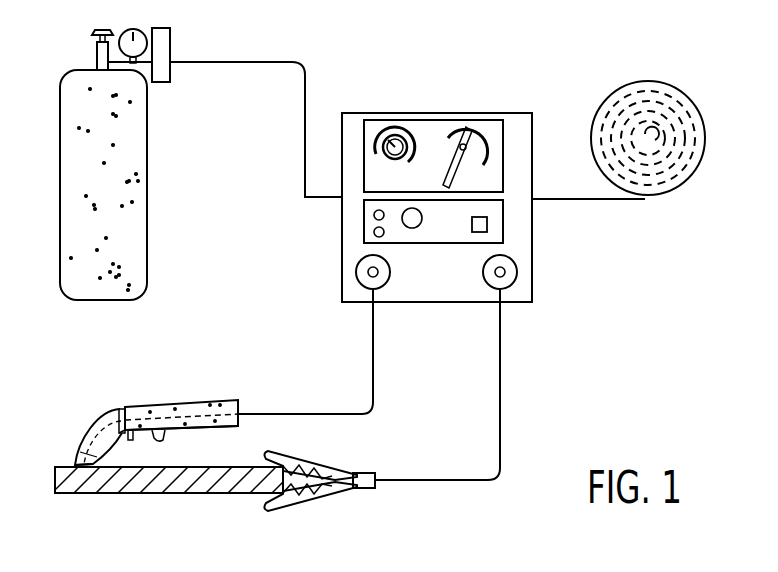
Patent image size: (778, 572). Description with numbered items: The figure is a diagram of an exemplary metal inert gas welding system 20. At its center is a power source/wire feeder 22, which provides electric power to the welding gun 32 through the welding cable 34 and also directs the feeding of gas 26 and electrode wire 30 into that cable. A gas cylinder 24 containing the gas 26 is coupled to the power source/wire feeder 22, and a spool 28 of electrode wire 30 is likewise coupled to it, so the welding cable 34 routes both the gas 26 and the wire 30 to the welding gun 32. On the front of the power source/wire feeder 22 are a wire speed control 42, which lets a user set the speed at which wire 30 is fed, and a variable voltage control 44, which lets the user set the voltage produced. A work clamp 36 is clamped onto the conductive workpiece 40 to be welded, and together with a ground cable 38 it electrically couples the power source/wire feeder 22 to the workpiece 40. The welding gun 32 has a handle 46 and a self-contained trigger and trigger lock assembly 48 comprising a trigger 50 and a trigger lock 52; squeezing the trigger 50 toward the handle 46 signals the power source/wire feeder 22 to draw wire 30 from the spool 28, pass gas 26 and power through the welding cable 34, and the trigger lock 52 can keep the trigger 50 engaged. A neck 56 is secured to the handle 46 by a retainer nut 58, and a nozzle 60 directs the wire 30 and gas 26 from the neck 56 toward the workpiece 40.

The MIG welding system 20 is at (466, 43).
The power source/wire feeder 22 is at (522, 113).
The gas cylinder 24 is at (60, 133).
The gas 26 is at (113, 267).
The spool 28 is at (701, 162).
The electrode wire 30 is at (666, 110).
The welding gun 32 is at (217, 393).
The welding cable 34 is at (375, 360).
The work clamp 36 is at (324, 462).
The ground cable 38 is at (500, 363).
The workpiece 40 is at (207, 486).
The wire speed control 42 is at (380, 133).
The variable voltage control 44 is at (490, 144).
The handle 46 is at (203, 429).
The self-contained trigger and trigger lock assembly 48 is at (156, 443).
The trigger 50 is at (184, 432).
The trigger lock 52 is at (124, 436).
The neck 56 is at (98, 414).
The retainer nut 58 is at (120, 411).
The nozzle 60 is at (73, 461).